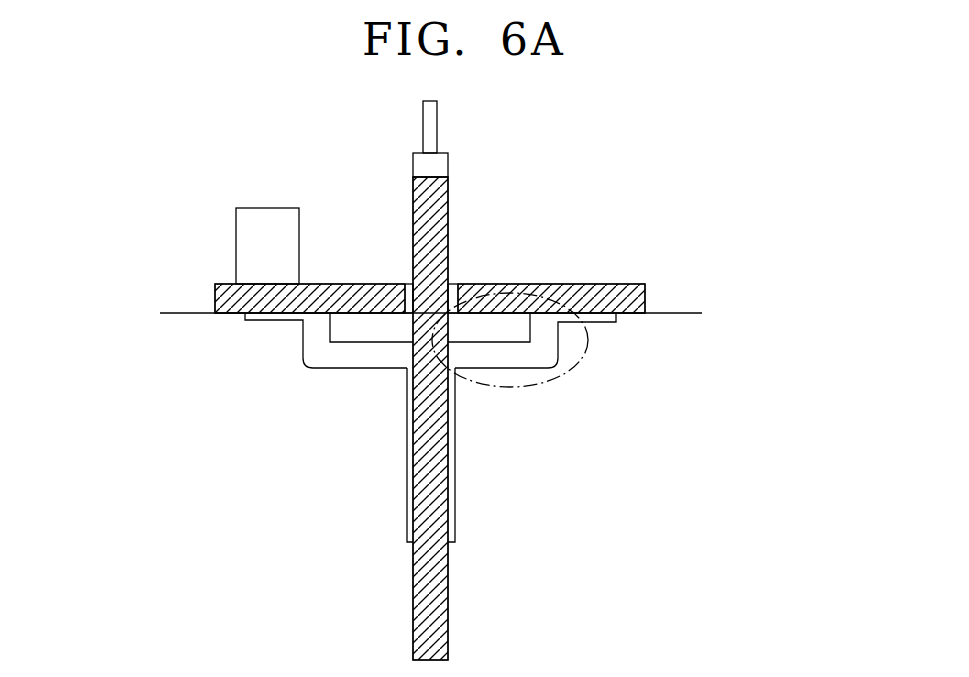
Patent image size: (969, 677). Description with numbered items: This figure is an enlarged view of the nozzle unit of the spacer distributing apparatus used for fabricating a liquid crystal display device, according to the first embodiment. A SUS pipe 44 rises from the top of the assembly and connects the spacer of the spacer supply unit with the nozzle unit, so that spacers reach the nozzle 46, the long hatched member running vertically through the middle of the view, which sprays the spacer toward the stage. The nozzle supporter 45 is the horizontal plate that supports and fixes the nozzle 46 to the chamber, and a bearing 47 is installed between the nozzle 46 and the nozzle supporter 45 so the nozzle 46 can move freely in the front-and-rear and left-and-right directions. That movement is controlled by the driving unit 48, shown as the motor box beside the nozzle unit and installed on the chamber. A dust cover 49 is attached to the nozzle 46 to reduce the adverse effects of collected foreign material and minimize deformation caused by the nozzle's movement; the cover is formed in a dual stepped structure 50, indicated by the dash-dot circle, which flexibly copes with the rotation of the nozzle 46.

The SUS pipe 44 is at (437, 122).
The nozzle supporter 45 is at (645, 289).
The nozzle 46 is at (448, 568).
The bearing 47 is at (405, 293).
The driving unit 48 is at (246, 240).
The dust cover 49 is at (455, 455).
The dual stepped structure 50 is at (572, 373).